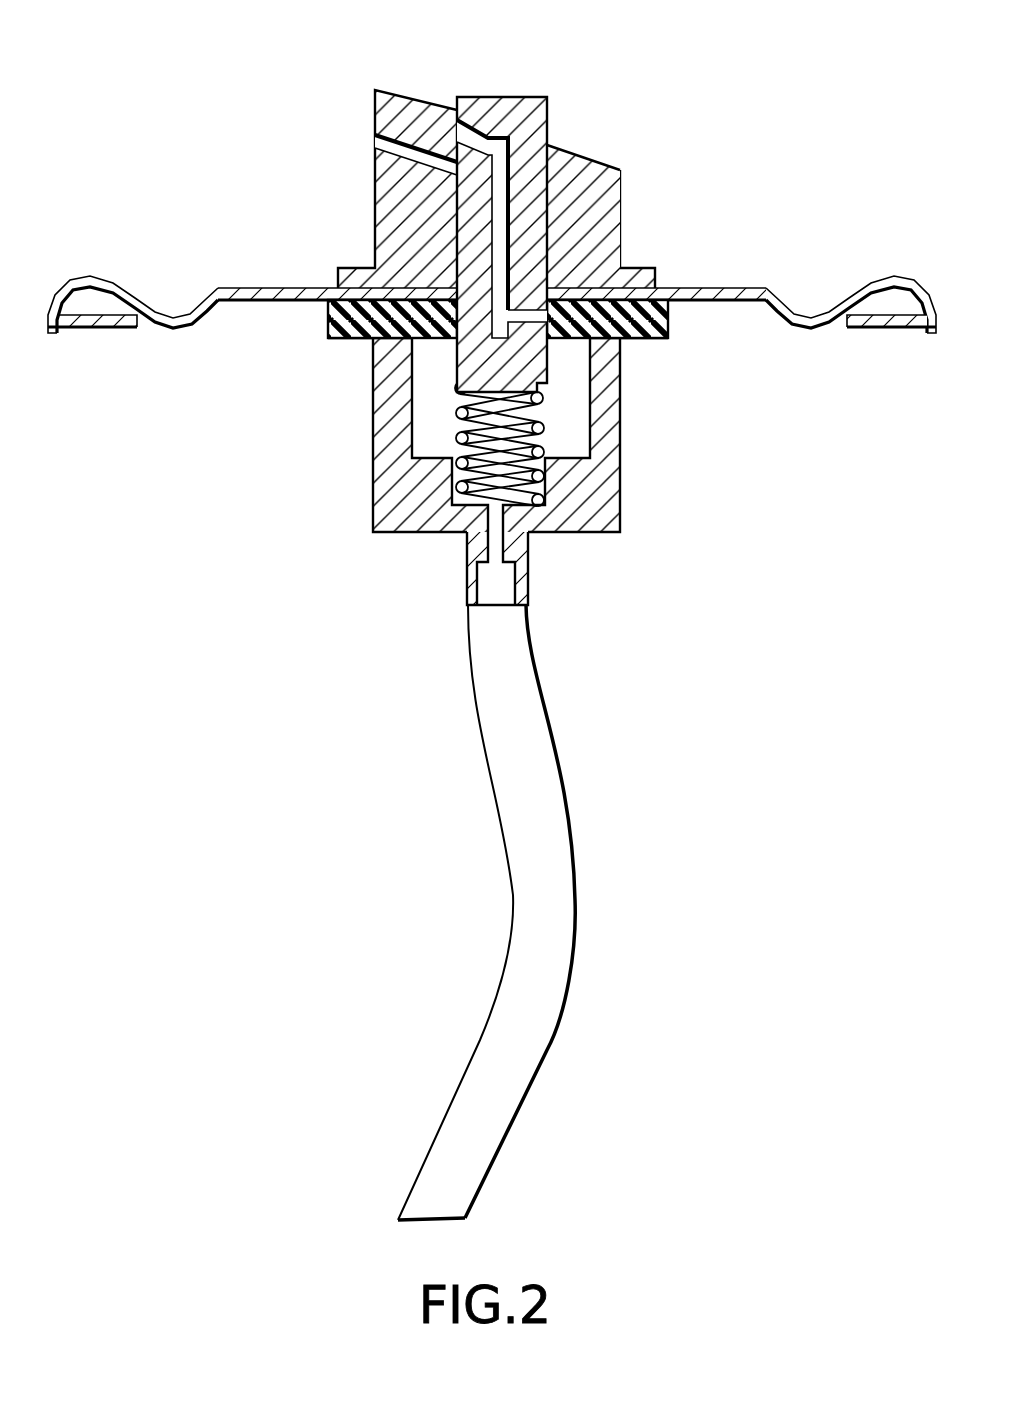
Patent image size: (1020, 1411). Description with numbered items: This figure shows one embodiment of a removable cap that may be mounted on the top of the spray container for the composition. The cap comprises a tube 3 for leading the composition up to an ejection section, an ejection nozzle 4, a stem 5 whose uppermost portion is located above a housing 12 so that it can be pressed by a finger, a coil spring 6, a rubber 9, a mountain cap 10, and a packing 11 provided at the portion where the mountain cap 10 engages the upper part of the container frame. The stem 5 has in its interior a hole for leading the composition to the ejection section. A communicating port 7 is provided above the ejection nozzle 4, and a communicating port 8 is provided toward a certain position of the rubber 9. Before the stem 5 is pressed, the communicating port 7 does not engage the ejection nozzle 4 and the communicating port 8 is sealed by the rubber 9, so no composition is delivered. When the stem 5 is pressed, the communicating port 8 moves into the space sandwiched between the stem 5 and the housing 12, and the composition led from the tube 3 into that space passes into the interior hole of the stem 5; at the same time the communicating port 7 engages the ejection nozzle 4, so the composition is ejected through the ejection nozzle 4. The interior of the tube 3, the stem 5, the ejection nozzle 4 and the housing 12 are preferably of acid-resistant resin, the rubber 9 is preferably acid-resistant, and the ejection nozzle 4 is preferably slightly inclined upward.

The tube 3 is at (513, 687).
The ejection nozzle 4 is at (385, 147).
The stem 5 is at (513, 97).
The coil spring 6 is at (447, 510).
The communicating port 7 is at (473, 133).
The communicating port 8 is at (520, 318).
The rubber 9 is at (667, 337).
The mountain cap 10 is at (700, 297).
The packing 11 is at (880, 330).
The housing 12 is at (583, 170).